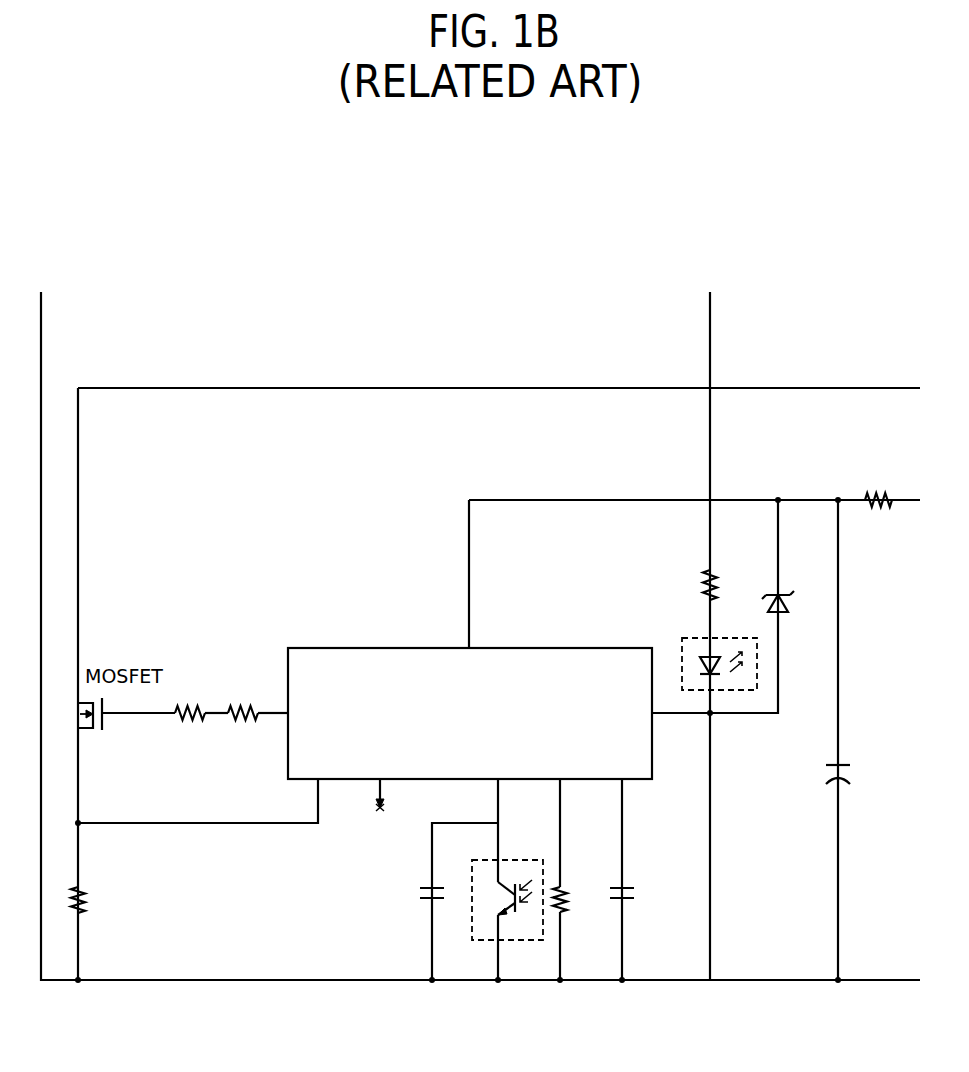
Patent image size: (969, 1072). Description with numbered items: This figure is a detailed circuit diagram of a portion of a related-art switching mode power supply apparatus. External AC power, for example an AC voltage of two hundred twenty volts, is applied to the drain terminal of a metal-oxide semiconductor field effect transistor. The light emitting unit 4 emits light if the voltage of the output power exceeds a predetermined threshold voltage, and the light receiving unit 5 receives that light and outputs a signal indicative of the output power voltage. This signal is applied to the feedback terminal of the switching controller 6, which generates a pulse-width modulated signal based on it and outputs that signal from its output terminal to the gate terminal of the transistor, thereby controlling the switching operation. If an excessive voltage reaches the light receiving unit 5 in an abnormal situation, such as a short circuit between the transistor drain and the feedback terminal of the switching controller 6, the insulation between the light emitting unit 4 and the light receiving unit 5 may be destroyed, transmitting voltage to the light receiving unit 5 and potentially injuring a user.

The light emitting unit 4 is at (742, 690).
The light receiving unit 5 is at (524, 940).
The switching controller 6 is at (362, 648).